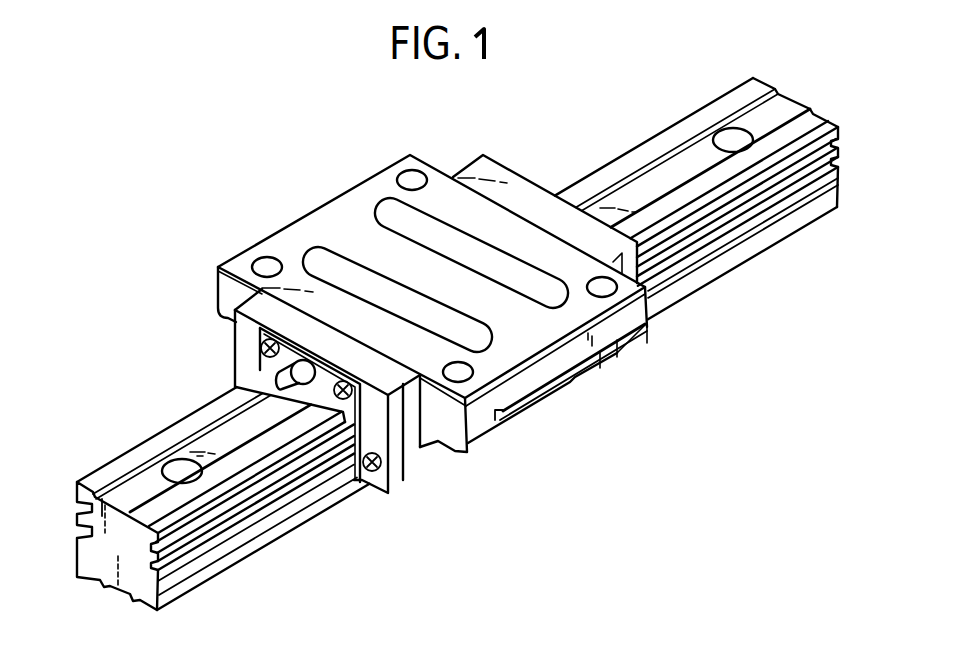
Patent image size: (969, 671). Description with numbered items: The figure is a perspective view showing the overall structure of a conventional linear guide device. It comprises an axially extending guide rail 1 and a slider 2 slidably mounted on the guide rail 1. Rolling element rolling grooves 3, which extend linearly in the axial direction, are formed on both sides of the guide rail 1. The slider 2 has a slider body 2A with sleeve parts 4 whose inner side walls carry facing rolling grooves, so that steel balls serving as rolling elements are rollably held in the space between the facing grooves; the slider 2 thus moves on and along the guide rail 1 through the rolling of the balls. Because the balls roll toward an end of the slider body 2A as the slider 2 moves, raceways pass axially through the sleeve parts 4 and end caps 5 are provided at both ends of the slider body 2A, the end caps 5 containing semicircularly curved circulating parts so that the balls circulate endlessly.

The guide rail 1 is at (672, 150).
The slider 2 is at (300, 212).
The slider body 2A is at (369, 200).
The rolling element rolling grooves 3 is at (89, 533).
The sleeve parts 4 is at (232, 285).
The end caps 5 is at (525, 193).